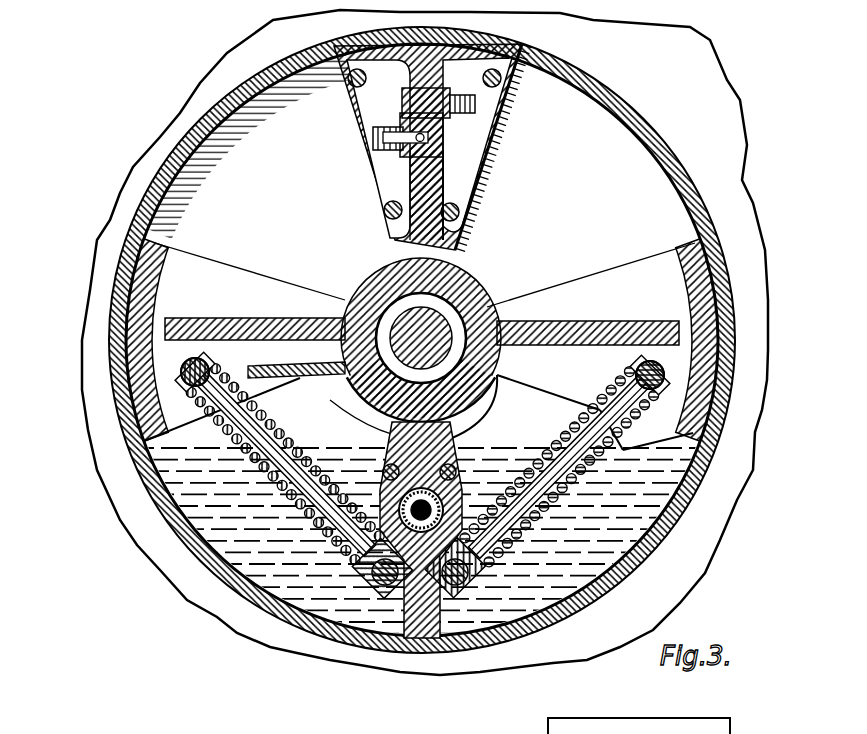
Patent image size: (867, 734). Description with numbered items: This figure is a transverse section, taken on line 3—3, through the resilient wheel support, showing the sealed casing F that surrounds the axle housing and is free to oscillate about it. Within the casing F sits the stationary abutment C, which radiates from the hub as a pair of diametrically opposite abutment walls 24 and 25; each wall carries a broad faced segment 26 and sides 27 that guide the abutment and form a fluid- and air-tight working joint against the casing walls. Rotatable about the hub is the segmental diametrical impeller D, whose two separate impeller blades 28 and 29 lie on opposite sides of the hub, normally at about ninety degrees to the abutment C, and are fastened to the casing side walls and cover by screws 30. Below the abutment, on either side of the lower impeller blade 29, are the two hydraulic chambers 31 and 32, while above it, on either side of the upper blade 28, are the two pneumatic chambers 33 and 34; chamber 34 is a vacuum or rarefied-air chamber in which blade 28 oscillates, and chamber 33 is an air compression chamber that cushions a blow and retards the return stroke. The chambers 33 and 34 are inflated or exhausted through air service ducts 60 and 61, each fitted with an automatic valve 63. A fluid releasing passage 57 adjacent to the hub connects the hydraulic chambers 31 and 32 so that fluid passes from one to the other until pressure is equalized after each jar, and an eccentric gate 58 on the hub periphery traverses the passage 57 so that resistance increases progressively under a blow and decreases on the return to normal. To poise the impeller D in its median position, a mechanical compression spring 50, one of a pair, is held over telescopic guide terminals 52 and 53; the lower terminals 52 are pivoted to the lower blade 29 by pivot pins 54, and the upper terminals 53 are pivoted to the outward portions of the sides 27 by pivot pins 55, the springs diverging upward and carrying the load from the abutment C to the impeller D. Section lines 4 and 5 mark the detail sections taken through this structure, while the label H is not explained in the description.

The air service duct 60 is at (412, 336).
The automatic valve 63 is at (378, 128).
The air service duct 61 is at (395, 150).
The impeller blade 28 is at (410, 190).
The screws 30 is at (390, 211).
The pneumatic chamber 33 is at (270, 157).
The pneumatic chamber 34 is at (590, 172).
The segmental diametrical impeller D is at (395, 363).
The abutment C is at (422, 326).
The stationary abutment wall 25 is at (690, 280).
The broad faced segment 26 is at (124, 325).
The stationary abutment wall 24 is at (197, 322).
The sides 27 is at (268, 290).
The housing H is at (163, 137).
The hub 3 is at (362, 405).
The eccentric gate 58 is at (500, 398).
The impeller blade 29 is at (301, 563).
The hydraulic chamber 31 is at (230, 577).
The fluid releasing passage 57 is at (400, 432).
The telescopic guide terminal 53 is at (412, 503).
The pivot pin 55 is at (183, 373).
The telescopic guide terminal 52 is at (300, 572).
The mechanical compression spring 50 is at (243, 452).
The pivot pin 54 is at (350, 640).
The hydraulic chamber 32 is at (568, 593).
The section line 5 is at (372, 467).
The section line 4 is at (382, 472).
The sealed casing F is at (285, 503).